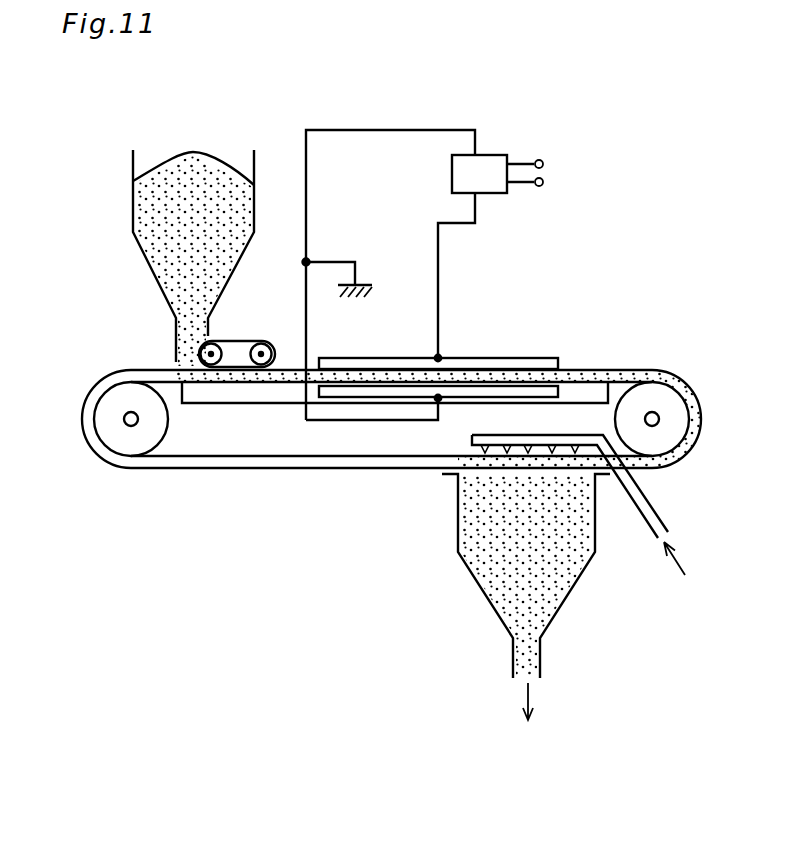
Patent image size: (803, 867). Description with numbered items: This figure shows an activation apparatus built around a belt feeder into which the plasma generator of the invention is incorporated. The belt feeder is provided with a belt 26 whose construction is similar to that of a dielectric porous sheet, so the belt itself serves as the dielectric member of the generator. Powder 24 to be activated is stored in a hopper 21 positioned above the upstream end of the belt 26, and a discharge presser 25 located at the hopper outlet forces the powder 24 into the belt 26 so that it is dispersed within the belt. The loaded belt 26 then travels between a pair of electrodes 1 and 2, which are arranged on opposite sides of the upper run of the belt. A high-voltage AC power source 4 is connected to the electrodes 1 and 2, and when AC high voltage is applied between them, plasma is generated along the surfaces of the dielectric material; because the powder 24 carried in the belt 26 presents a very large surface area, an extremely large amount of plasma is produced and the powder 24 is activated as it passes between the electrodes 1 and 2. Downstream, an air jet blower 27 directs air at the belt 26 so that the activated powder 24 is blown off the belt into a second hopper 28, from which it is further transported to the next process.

The electrode 1 is at (468, 362).
The electrode 2 is at (513, 392).
The high-voltage AC power source 4 is at (486, 153).
The hopper 21 is at (255, 167).
The powder 24 is at (198, 162).
The discharge presser 25 is at (239, 352).
The belt 26 is at (113, 372).
The air jet blower 27 is at (563, 437).
The hopper 28 is at (570, 588).